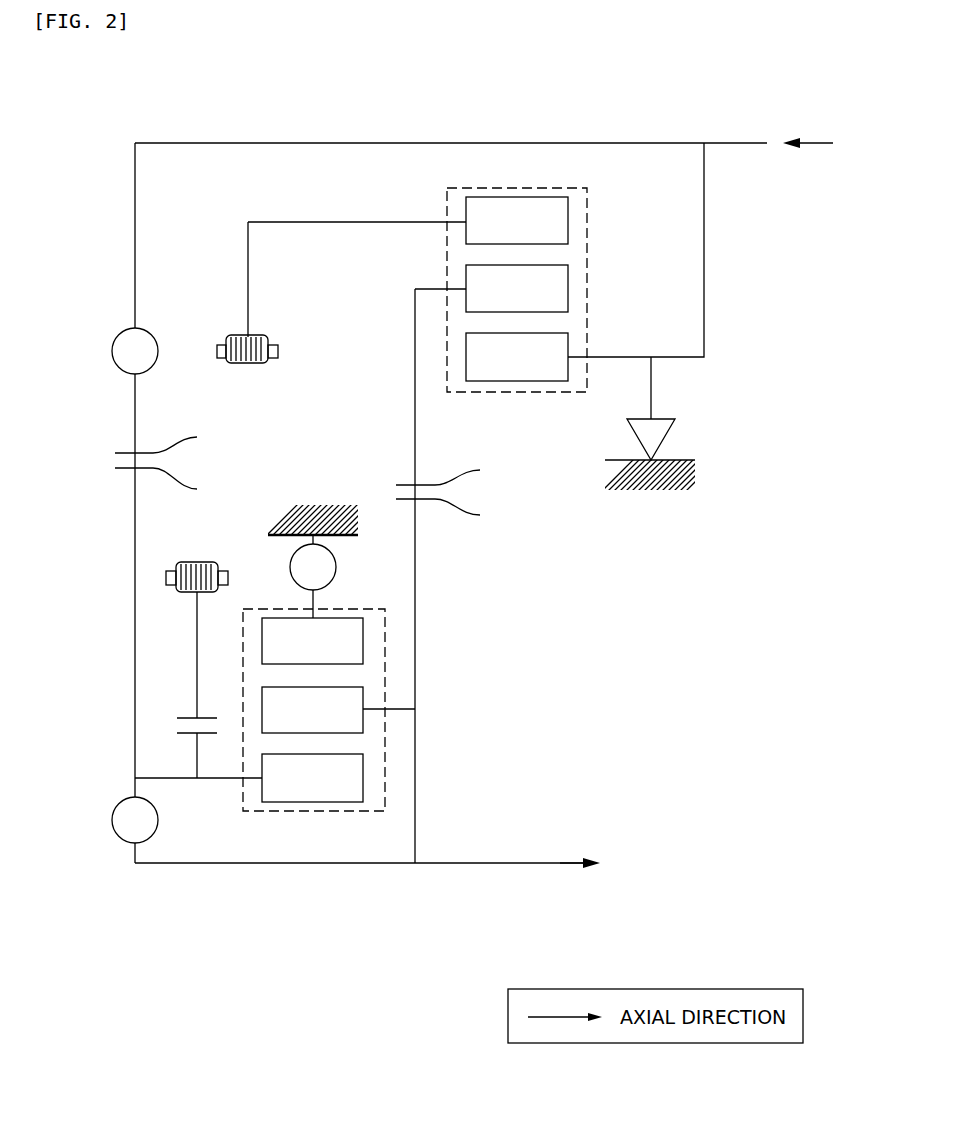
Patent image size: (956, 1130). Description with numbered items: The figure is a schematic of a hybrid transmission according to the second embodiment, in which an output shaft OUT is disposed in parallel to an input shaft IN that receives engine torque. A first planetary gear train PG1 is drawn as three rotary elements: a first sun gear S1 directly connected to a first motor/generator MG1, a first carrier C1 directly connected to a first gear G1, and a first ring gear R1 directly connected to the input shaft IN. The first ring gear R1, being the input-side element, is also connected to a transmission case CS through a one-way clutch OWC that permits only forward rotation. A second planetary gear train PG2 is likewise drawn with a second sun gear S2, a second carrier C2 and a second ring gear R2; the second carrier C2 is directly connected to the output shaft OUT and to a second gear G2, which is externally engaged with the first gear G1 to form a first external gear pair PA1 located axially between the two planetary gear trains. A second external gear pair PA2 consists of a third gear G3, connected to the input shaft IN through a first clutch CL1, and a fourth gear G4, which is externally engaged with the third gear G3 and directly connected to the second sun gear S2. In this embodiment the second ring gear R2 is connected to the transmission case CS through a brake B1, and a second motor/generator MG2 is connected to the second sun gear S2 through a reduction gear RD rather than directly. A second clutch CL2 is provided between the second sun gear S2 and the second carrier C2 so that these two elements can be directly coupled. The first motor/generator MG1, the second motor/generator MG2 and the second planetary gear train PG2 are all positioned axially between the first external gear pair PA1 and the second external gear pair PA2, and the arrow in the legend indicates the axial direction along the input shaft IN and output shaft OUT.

The input shaft IN is at (735, 143).
The output shaft OUT is at (517, 864).
The first planetary gear train PG1 is at (570, 166).
The first sun gear S1 is at (517, 220).
The first carrier C1 is at (517, 288).
The first ring gear R1 is at (517, 357).
The second planetary gear train PG2 is at (318, 825).
The second sun gear S2 is at (312, 778).
The second carrier C2 is at (312, 710).
The second ring gear R2 is at (312, 641).
The one-way clutch OWC is at (675, 408).
The transmission case CS is at (690, 476).
The first clutch CL1 is at (135, 351).
The second clutch CL2 is at (135, 820).
The first motor/generator MG1 is at (247, 363).
The second motor/generator MG2 is at (197, 628).
The brake B1 is at (313, 576).
The reduction gear RD is at (160, 718).
The first external gear pair PA1 is at (483, 494).
The first gear G1 is at (473, 471).
The second gear G2 is at (473, 514).
The second external gear pair PA2 is at (200, 462).
The third gear G3 is at (191, 438).
The fourth gear G4 is at (191, 484).